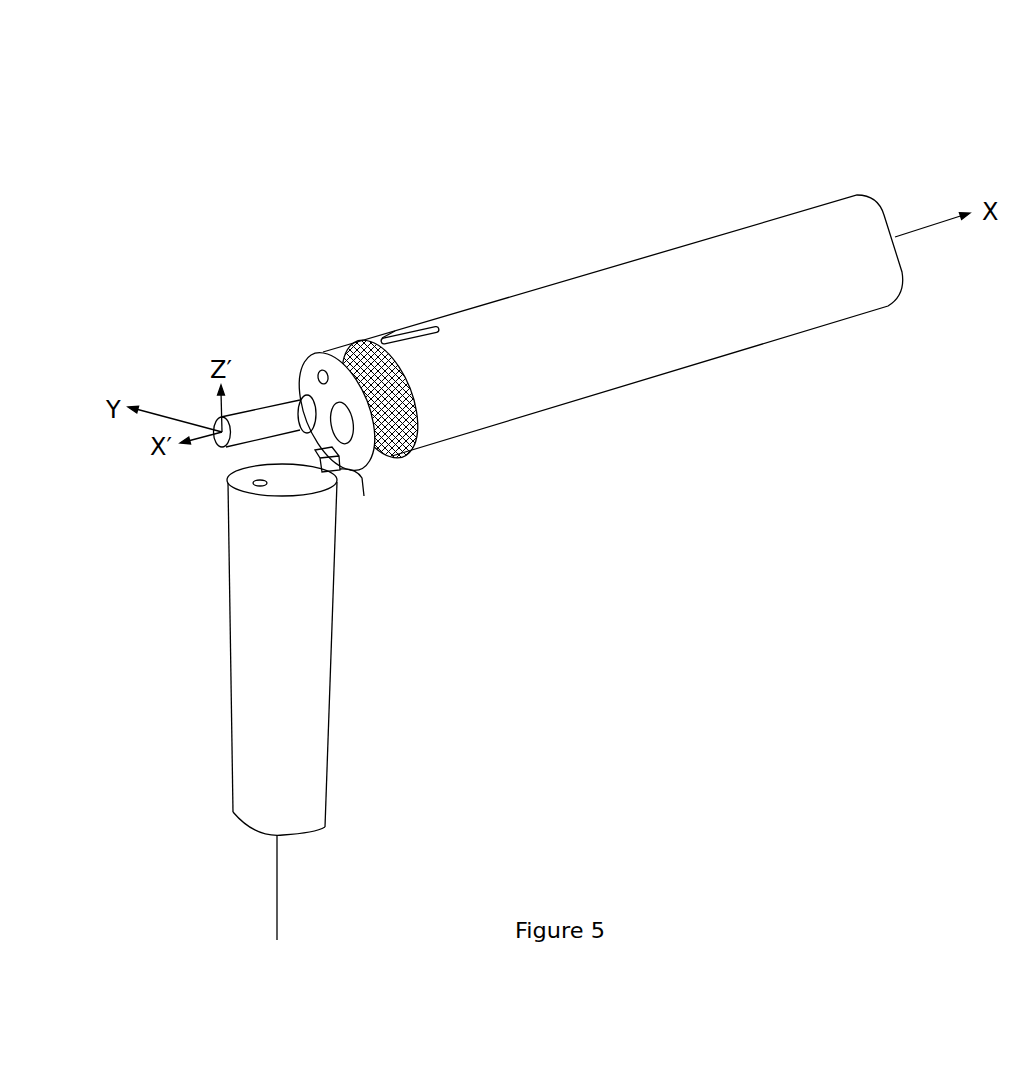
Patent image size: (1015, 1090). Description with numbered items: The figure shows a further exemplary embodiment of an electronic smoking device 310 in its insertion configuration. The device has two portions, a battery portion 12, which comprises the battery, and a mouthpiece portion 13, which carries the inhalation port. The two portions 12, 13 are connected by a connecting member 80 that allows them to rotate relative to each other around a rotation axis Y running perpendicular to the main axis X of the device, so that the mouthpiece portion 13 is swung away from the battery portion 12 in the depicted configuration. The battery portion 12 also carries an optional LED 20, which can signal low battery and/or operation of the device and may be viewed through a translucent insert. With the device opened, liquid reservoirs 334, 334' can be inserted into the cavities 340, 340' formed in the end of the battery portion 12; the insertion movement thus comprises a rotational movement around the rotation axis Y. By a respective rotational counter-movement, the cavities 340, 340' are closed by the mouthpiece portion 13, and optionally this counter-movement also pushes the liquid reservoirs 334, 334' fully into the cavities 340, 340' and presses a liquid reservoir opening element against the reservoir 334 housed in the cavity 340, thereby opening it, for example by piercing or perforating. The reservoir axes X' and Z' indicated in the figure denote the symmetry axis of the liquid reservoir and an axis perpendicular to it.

The electronic smoking device 310 is at (752, 137).
The battery portion 12 is at (690, 367).
The light-emitting diode (LED) 20 is at (434, 326).
The cavity 340 is at (437, 431).
The cavity 340' is at (311, 321).
The liquid reservoir 334 is at (357, 473).
The liquid reservoir 334' is at (265, 372).
The connecting element 80 is at (343, 472).
The mouthpiece portion 13 is at (322, 700).